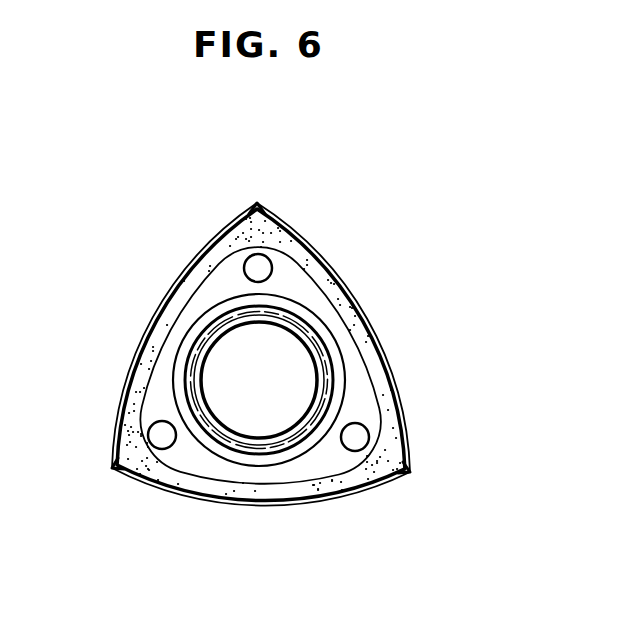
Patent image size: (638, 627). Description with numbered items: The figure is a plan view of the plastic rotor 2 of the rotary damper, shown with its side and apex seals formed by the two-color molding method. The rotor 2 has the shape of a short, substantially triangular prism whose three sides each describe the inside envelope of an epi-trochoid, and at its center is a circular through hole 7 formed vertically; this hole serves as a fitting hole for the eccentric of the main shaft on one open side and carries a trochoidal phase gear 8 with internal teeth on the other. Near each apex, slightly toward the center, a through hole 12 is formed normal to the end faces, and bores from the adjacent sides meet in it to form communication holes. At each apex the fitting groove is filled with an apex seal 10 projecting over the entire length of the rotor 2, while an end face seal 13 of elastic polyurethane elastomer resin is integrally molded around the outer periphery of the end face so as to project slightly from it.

The rotor 2 is at (195, 238).
The circular through hole 7 is at (231, 374).
The trochoidal phase gear 8 is at (321, 355).
The apex seals 10 is at (261, 206).
The through holes 12 is at (264, 269).
The end face seals 13 is at (179, 306).